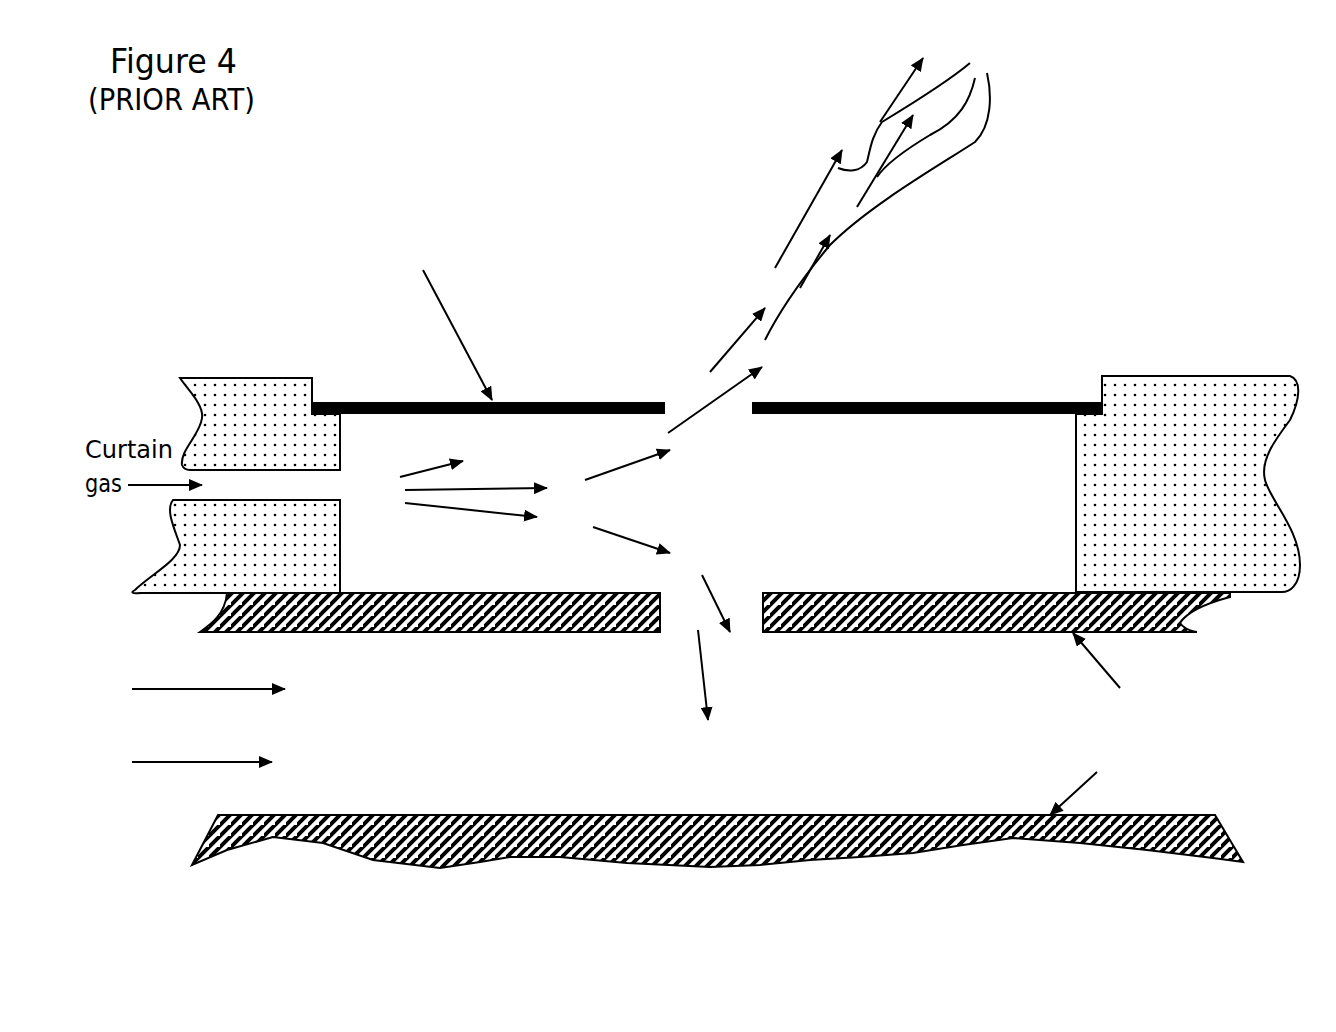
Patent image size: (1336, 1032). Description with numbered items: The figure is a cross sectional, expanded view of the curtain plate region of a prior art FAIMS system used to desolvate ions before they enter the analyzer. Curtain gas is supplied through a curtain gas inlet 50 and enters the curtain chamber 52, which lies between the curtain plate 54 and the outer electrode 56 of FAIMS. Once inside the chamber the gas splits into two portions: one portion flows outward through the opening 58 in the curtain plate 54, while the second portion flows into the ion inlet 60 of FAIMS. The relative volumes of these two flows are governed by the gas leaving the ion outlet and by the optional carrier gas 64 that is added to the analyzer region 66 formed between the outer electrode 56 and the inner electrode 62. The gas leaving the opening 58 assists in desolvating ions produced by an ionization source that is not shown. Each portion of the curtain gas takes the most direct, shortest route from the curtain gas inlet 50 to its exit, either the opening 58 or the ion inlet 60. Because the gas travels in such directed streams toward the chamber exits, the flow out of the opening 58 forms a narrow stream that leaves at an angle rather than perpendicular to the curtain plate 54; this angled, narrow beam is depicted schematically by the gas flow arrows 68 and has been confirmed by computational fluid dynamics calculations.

The curtain gas inlet 50 is at (342, 483).
The curtain chamber 52 is at (977, 507).
The curtain plate 54 is at (930, 403).
The outer electrode 56 is at (897, 633).
The opening 58 is at (683, 403).
The ion inlet 60 is at (683, 613).
The inner electrode 62 is at (457, 817).
The carrier gas 64 is at (165, 761).
The analyzer region 66 is at (815, 787).
The gas flow arrows 68 is at (928, 60).